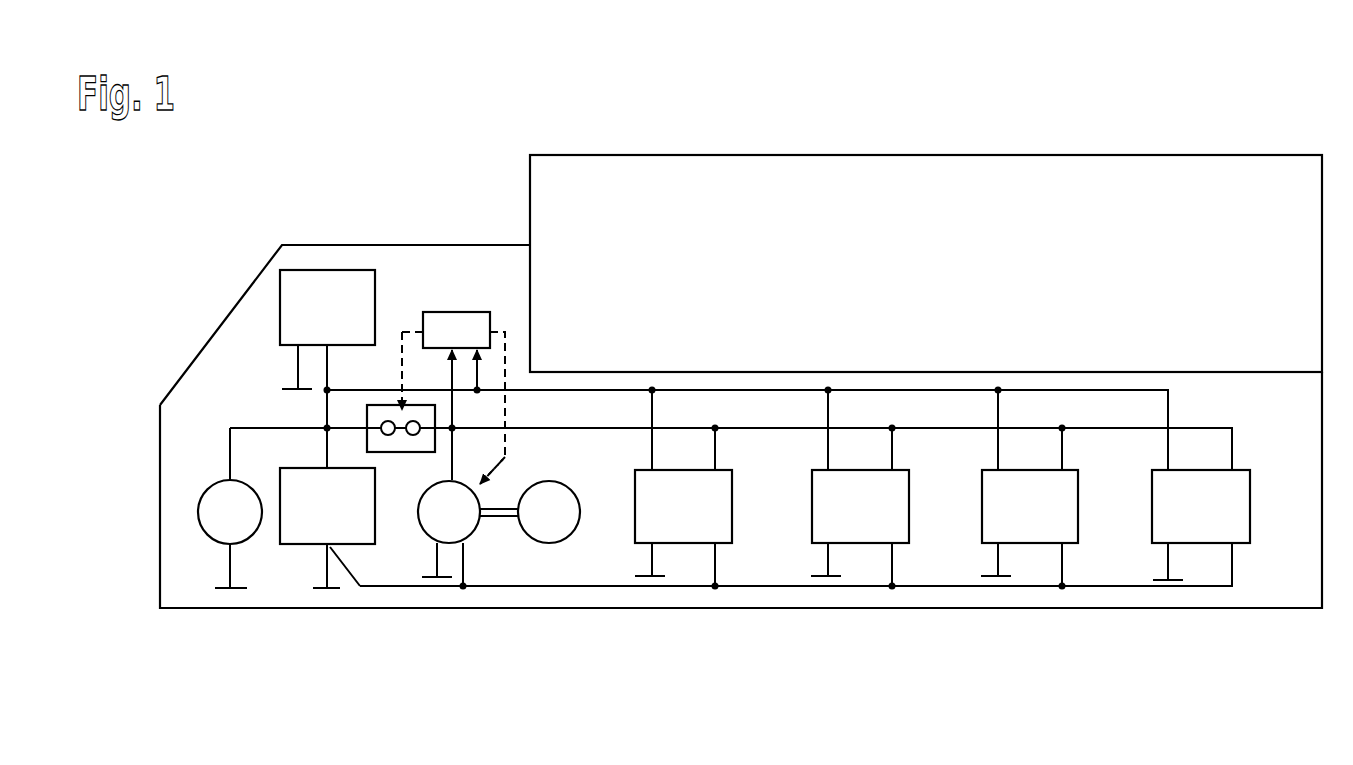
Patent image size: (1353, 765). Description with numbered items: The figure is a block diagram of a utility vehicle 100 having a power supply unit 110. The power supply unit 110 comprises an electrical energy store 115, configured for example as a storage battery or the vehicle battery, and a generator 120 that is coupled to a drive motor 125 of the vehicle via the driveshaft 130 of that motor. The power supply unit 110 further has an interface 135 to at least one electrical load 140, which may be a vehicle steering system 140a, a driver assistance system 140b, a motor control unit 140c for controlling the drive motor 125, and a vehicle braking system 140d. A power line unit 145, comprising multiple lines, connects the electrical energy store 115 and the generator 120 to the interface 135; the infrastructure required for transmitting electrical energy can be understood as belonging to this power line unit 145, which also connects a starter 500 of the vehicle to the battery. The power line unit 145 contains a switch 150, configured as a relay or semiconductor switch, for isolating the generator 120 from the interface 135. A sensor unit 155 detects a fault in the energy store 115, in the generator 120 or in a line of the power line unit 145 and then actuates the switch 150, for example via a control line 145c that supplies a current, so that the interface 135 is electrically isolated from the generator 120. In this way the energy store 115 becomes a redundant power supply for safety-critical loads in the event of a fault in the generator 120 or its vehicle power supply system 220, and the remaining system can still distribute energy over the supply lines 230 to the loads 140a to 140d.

The utility vehicle 100 is at (232, 296).
The power supply unit 110 is at (260, 412).
The electrical energy store 115 is at (277, 540).
The generator 120 is at (420, 523).
The drive motor 125 is at (563, 543).
The driveshaft 130 is at (498, 517).
The interface 135 is at (327, 460).
The electrical load 140 is at (327, 270).
The vehicle steering system 140a is at (690, 547).
The driver assistance system 140b is at (867, 547).
The motor control unit 140c is at (1035, 547).
The vehicle braking system 140d is at (1207, 547).
The power line unit 145 is at (455, 415).
The control line 145c is at (402, 332).
The switch 150 is at (418, 405).
The sensor unit 155 is at (465, 312).
The vehicle power supply system 220 is at (845, 390).
The second supply line 230 is at (937, 428).
The starter 500 is at (198, 510).